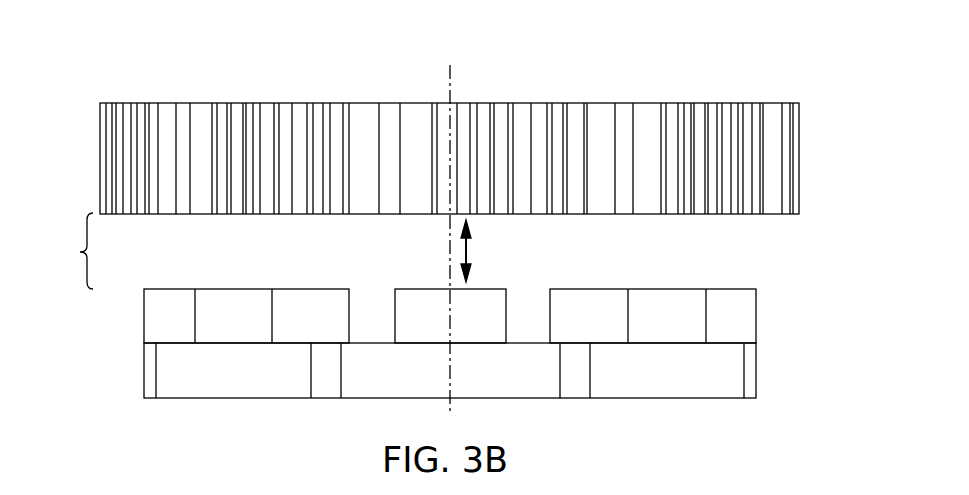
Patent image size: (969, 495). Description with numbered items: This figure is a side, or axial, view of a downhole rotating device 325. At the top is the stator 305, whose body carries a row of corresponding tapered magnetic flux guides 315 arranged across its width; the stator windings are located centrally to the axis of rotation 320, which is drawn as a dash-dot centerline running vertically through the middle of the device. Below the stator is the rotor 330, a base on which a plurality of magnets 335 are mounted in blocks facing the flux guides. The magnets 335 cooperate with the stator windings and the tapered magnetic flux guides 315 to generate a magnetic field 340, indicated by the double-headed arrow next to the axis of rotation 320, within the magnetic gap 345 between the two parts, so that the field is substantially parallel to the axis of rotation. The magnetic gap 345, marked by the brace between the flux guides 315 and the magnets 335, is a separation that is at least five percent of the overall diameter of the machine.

The stator 305 is at (811, 158).
The tapered magnetic flux guides 315 is at (100, 160).
The axis of rotation 320 is at (452, 80).
The downhole rotating device 325 is at (276, 72).
The rotor 330 is at (150, 373).
The magnets 335 is at (152, 318).
The magnetic field 340 is at (470, 252).
The magnetic gap 345 is at (62, 251).